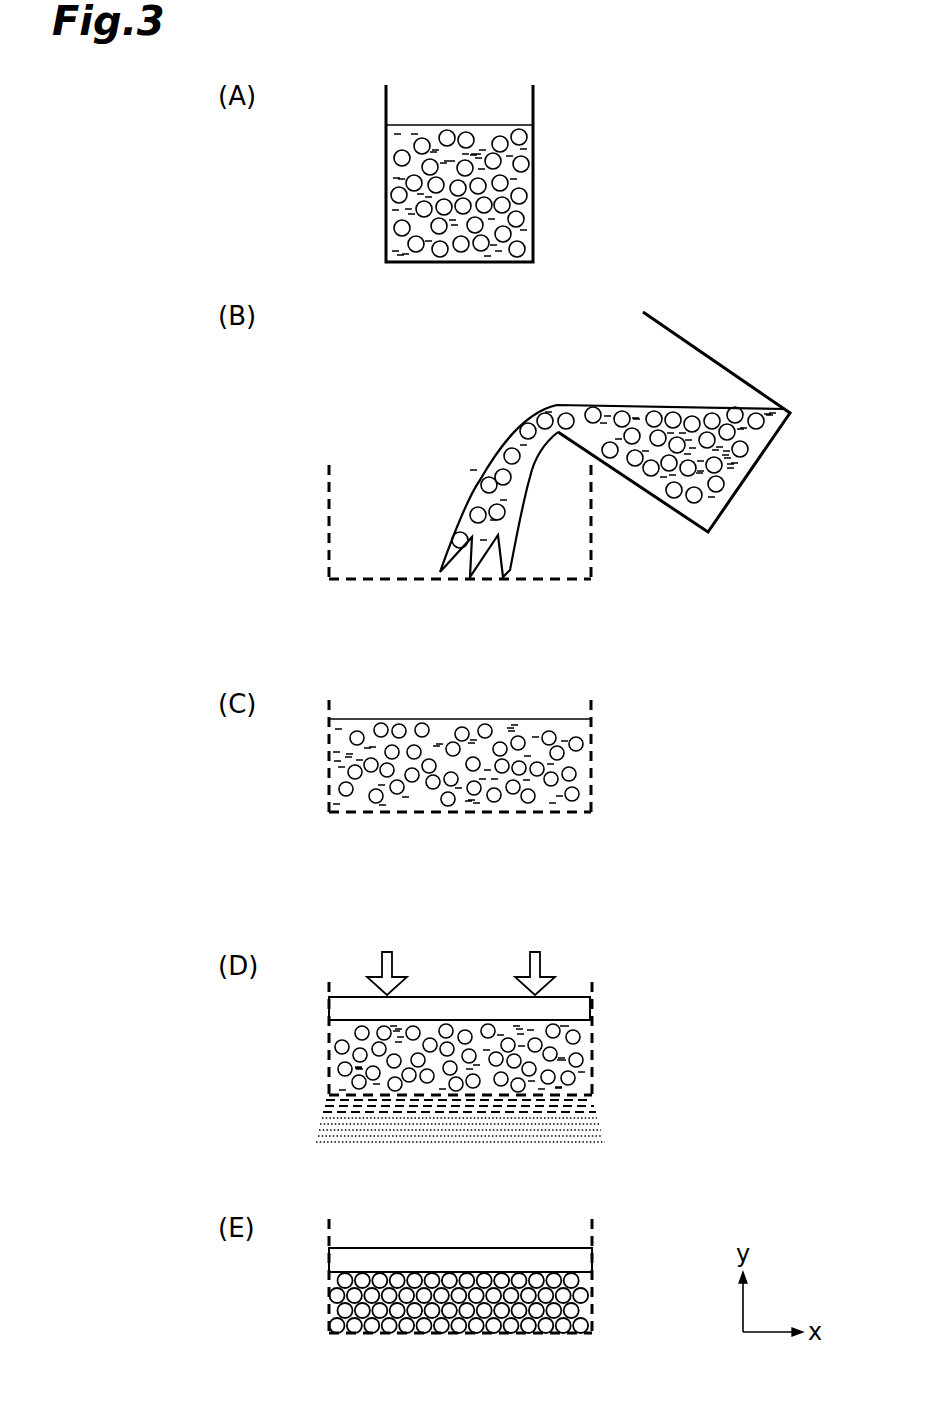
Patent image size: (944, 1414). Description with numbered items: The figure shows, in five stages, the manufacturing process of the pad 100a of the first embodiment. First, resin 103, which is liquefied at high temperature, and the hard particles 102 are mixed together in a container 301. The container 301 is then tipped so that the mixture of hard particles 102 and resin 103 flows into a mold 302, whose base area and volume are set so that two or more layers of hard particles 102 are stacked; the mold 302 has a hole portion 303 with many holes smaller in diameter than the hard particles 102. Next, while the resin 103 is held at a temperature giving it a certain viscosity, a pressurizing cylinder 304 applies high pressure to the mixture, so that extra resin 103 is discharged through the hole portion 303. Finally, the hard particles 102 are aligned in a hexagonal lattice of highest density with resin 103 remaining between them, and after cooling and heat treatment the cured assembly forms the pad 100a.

The container 301 is at (533, 107).
The hard particles 102 is at (522, 186).
The resin 103 is at (522, 206).
The mold 302 is at (592, 535).
The hole portion 303 is at (533, 582).
The pressurizing cylinder 304 is at (560, 1008).
The pad 100a is at (311, 1297).